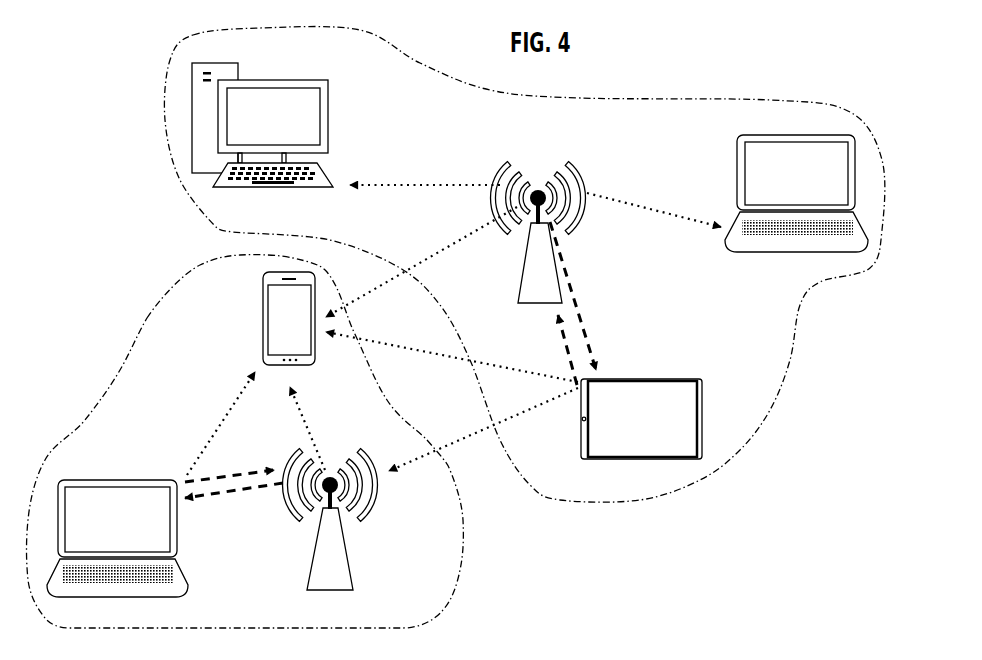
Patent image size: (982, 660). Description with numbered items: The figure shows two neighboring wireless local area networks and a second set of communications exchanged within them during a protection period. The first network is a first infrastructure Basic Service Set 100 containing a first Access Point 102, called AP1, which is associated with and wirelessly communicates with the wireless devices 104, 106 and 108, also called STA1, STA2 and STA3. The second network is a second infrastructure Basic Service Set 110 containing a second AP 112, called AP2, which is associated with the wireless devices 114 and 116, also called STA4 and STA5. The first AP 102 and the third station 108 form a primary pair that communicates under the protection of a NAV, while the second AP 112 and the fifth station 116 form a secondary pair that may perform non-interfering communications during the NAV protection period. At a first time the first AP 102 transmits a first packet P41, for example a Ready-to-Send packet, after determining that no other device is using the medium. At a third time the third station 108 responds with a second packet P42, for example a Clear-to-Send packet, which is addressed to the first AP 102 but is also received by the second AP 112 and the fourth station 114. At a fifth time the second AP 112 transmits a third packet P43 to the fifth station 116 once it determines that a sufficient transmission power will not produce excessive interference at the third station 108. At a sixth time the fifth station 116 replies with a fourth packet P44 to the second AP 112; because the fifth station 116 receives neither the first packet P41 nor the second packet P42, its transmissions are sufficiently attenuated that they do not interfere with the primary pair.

The first infrastructure Basic Service Set 100 is at (194, 221).
The second infrastructure Basic Service Set 110 is at (145, 319).
The first Access Point 102 is at (526, 240).
The wireless device 104 is at (329, 108).
The wireless device 106 is at (737, 146).
The wireless device 108 is at (670, 380).
The second AP 112 is at (340, 591).
The wireless device 114 is at (263, 323).
The wireless device 116 is at (112, 480).
The first packet P41 is at (541, 190).
The second packet P42 is at (577, 385).
The third packet P43 is at (332, 477).
The fourth packet P44 is at (183, 480).